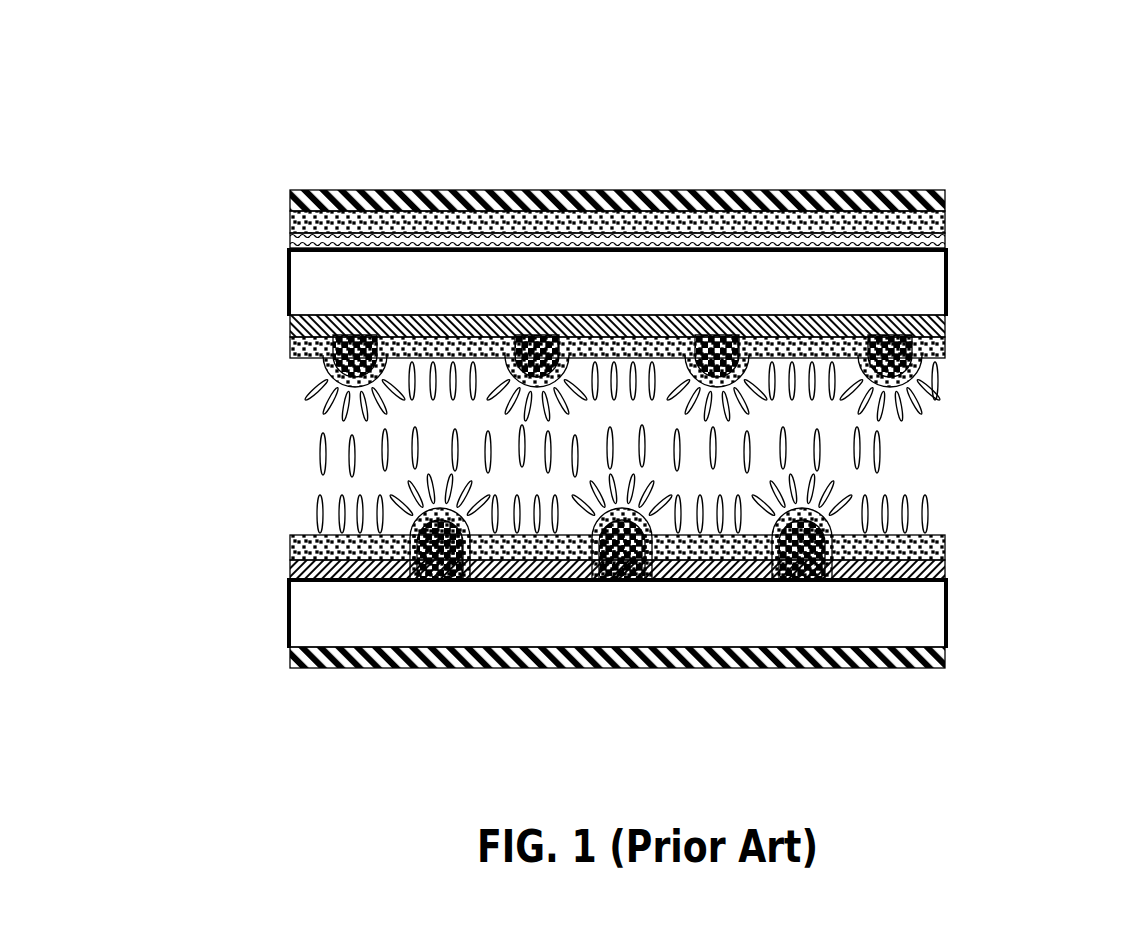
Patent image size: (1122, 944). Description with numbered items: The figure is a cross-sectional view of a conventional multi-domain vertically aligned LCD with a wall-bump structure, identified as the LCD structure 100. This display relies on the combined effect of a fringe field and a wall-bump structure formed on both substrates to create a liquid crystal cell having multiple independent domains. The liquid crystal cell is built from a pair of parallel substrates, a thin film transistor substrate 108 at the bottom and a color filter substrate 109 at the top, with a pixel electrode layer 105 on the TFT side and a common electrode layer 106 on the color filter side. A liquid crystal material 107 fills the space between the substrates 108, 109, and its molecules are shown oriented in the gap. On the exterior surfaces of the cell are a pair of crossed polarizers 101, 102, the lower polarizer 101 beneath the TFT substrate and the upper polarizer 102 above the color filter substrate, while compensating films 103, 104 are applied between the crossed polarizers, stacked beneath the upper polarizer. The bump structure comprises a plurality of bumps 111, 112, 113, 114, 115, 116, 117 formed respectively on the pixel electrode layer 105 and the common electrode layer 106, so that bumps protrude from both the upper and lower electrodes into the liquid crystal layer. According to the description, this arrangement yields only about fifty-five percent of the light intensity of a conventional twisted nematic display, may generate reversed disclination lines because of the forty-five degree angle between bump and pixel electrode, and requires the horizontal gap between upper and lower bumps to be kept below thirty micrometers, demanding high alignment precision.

The LCD structure 100 is at (247, 0).
The polarizer 101 is at (945, 658).
The polarizer 102 is at (945, 200).
The compensating film 103 is at (945, 230).
The compensating film 104 is at (945, 243).
The pixel electrode layer 105 is at (945, 573).
The common electrode layer 106 is at (945, 340).
The liquid crystal material 107 is at (865, 478).
The thin film transistor substrate 108 is at (317, 612).
The color filter substrate 109 is at (893, 290).
The bump 111 is at (923, 370).
The bump 112 is at (737, 375).
The bump 113 is at (827, 547).
The bump 114 is at (332, 371).
The bump 115 is at (510, 367).
The bump 116 is at (415, 527).
The bump 117 is at (597, 560).